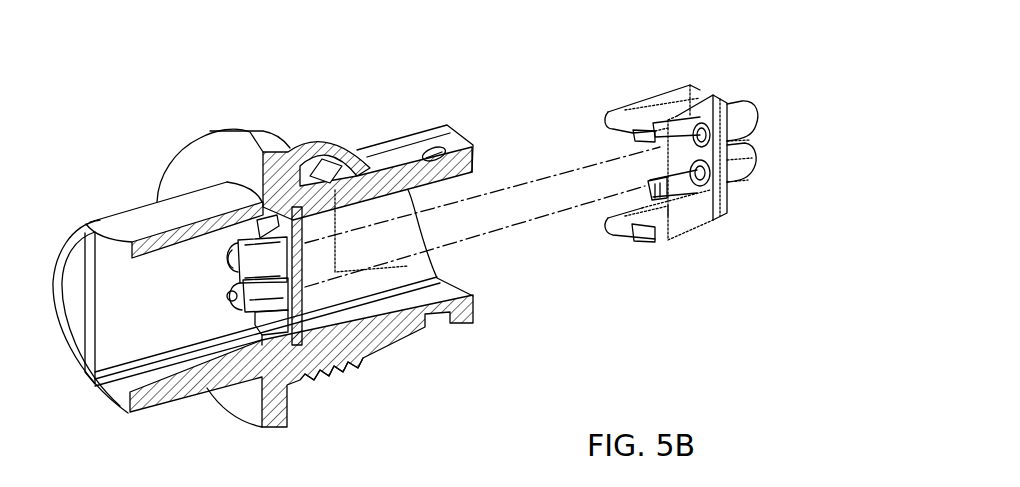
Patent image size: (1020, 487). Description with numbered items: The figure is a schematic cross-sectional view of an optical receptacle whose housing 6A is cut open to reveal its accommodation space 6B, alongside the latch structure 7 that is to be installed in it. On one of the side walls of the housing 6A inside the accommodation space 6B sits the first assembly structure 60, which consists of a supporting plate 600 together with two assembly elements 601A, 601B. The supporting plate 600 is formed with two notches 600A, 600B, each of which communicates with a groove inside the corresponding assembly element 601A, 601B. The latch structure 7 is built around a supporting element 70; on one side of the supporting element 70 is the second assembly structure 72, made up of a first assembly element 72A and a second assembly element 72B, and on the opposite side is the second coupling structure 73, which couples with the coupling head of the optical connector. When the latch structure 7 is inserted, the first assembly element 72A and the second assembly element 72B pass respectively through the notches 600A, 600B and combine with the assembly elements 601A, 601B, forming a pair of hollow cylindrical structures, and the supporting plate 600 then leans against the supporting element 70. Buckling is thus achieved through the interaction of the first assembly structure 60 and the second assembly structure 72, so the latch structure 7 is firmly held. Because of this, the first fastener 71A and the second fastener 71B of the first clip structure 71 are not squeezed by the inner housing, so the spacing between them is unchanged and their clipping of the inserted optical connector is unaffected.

The housing 6A is at (108, 214).
The accommodation space 6B is at (156, 311).
The first assembly structure 60 is at (283, 293).
The supporting plate 600 is at (396, 336).
The notch 600A is at (307, 177).
The notch 600B is at (317, 373).
The assembly element 601A is at (230, 283).
The assembly element 601B is at (263, 333).
The latch structure 7 is at (704, 105).
The supporting element 70 is at (720, 165).
The first clip structure 71 is at (631, 110).
The first fastener 71A is at (640, 118).
The second fastener 71B is at (633, 237).
The second assembly structure 72 is at (688, 187).
The first assembly element 72A is at (677, 130).
The second assembly element 72B is at (684, 197).
The second coupling structure 73 is at (737, 123).